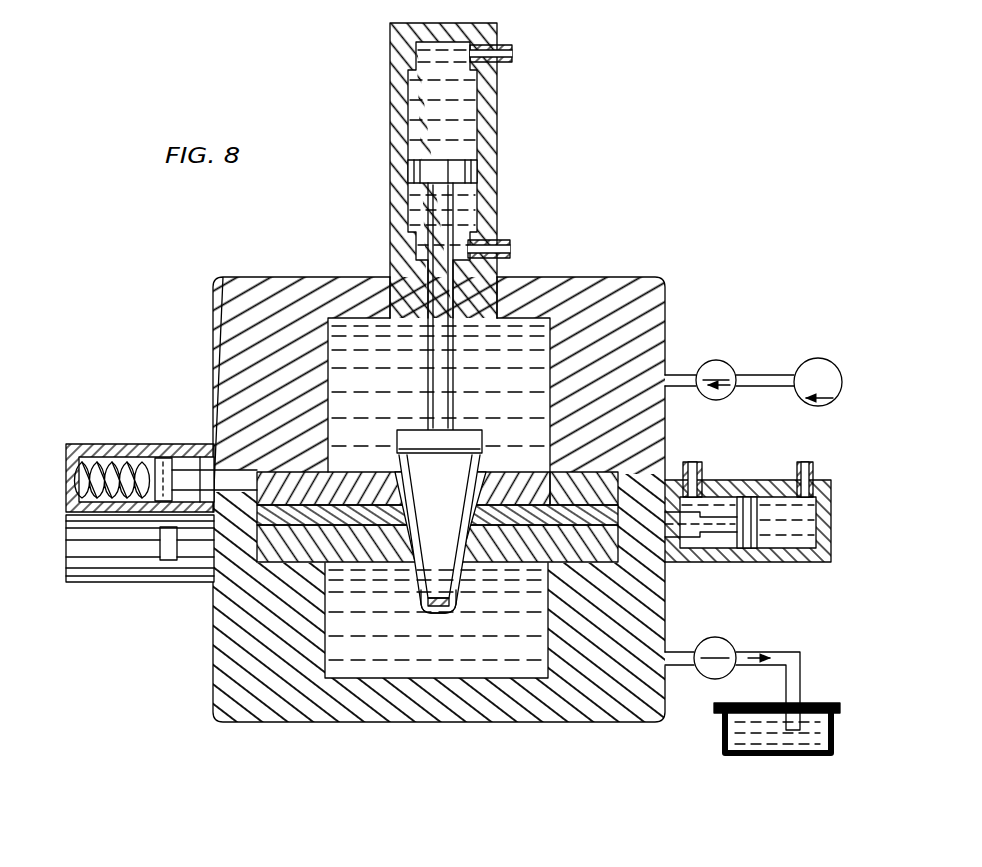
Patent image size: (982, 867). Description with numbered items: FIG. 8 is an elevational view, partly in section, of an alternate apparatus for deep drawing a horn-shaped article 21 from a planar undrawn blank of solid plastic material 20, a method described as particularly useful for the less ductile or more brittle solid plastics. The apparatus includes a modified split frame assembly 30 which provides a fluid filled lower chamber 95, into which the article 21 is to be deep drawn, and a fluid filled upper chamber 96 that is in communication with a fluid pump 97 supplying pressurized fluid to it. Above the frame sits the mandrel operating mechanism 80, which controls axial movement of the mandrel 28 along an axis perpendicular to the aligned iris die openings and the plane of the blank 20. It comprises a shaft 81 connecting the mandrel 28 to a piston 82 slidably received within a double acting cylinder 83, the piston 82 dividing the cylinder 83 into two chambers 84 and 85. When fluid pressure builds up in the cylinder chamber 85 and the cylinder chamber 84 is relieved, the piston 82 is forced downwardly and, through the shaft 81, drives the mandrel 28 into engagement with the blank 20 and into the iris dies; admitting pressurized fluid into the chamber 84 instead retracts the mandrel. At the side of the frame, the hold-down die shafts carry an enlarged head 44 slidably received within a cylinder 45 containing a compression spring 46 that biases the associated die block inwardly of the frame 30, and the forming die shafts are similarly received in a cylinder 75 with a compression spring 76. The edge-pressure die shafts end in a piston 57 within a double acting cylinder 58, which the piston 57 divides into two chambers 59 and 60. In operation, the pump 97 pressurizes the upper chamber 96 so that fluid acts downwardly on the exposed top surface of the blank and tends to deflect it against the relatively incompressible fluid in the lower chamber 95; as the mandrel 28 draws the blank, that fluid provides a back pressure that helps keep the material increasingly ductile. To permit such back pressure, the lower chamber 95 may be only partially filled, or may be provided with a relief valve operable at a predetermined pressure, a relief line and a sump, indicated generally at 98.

The split frame assembly 30 is at (203, 318).
The mandrel operating mechanism 80 is at (470, 170).
The double acting cylinder 83 is at (498, 134).
The cylinder chamber 85 is at (430, 101).
The piston 82 is at (418, 171).
The cylinder chamber 84 is at (414, 216).
The upper chamber 96 is at (360, 345).
The shaft 81 is at (438, 396).
The mandrel 28 is at (480, 428).
The blank of solid plastic material 20 is at (408, 528).
The horn-shaped article 21 is at (445, 612).
The lower chamber 95 is at (380, 668).
The cylinder 45 is at (80, 442).
The compression spring 46 is at (128, 456).
The enlarged head 44 is at (165, 458).
The cylinder 75 is at (95, 583).
The compression spring 76 is at (165, 562).
The fluid pump 97 is at (815, 358).
The double acting cylinder 58 is at (824, 570).
The chamber 59 is at (805, 515).
The piston 57 is at (745, 510).
The chamber 60 is at (724, 537).
The relief valve, relief line and sump 98 is at (777, 645).